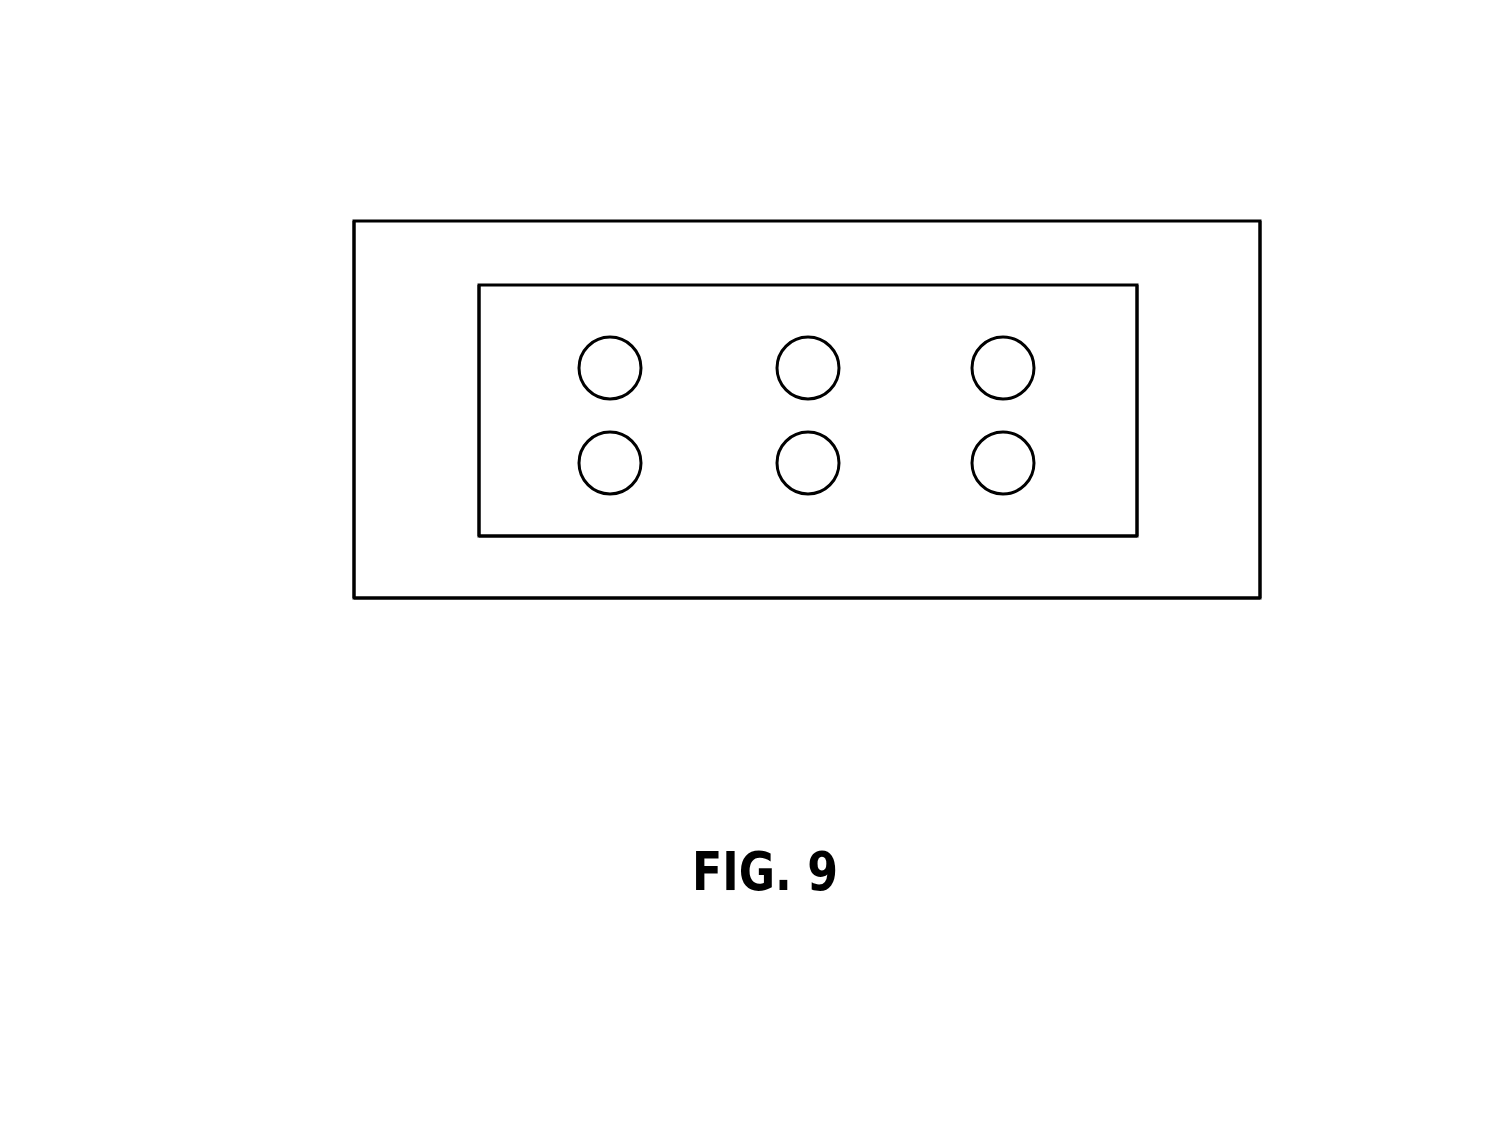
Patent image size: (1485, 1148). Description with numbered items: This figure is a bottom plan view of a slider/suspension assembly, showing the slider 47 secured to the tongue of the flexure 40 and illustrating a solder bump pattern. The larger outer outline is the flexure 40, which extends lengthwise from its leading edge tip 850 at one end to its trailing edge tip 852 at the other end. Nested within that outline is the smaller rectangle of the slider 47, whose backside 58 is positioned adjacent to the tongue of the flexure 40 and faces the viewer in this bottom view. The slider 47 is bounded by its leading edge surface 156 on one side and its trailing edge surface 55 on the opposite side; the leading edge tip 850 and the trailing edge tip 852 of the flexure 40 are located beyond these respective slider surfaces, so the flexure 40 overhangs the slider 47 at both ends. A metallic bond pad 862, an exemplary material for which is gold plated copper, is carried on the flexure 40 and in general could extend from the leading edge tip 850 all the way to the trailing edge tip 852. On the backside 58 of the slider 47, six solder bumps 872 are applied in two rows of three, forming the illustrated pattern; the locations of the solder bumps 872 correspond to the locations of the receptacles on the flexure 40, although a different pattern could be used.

The flexure 40 is at (715, 618).
The slider 47 is at (865, 267).
The trailing edge surface 55 is at (1267, 403).
The backside of the slider 58 is at (852, 571).
The leading edge surface 156 is at (308, 382).
The leading edge tip 850 is at (338, 444).
The trailing edge tip 852 is at (1283, 459).
The metallic bond pad 862 is at (786, 667).
The solder bumps 872 is at (806, 298).